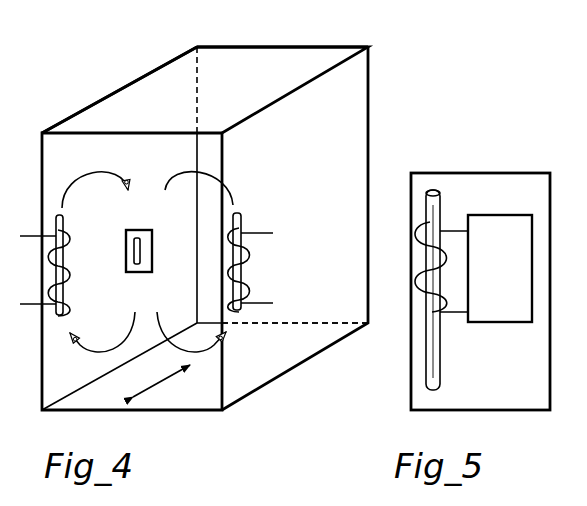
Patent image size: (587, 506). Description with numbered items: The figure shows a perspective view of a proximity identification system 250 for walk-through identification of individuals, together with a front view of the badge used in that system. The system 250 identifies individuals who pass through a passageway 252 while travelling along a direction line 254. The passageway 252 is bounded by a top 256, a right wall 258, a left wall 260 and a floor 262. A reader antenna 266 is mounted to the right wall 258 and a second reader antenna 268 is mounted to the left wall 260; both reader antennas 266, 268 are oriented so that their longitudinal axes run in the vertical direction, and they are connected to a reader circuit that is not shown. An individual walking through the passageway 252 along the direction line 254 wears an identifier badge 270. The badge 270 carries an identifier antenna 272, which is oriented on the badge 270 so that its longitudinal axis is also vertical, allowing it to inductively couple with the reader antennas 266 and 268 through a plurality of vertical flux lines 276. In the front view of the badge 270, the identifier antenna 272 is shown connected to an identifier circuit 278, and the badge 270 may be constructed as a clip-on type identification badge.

In FIG. 4, the proximity identification system 250 is at (179, 424).
In FIG. 4, the passageway 252 is at (277, 45).
In FIG. 4, the direction line 254 is at (155, 385).
In FIG. 4, the top 256 is at (254, 95).
In FIG. 4, the right wall 258 is at (344, 130).
In FIG. 4, the left wall 260 is at (101, 96).
In FIG. 4, the floor 262 is at (286, 363).
In FIG. 4, the reader antenna 266 is at (244, 218).
In FIG. 4, the reader antenna 268 is at (66, 224).
In FIG. 4, the identifier badge 270 is at (168, 232).
In FIG. 5, the identifier badge 270 is at (505, 384).
In FIG. 4, the identifier antenna 272 is at (126, 250).
In FIG. 5, the identifier antenna 272 is at (442, 208).
In FIG. 4, the vertical flux lines 276 is at (162, 188).
In FIG. 5, the identifier circuit 278 is at (517, 278).